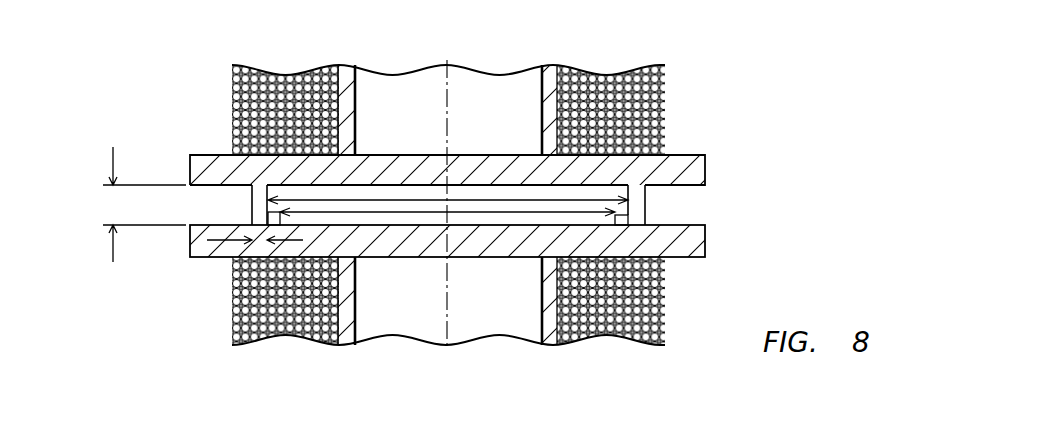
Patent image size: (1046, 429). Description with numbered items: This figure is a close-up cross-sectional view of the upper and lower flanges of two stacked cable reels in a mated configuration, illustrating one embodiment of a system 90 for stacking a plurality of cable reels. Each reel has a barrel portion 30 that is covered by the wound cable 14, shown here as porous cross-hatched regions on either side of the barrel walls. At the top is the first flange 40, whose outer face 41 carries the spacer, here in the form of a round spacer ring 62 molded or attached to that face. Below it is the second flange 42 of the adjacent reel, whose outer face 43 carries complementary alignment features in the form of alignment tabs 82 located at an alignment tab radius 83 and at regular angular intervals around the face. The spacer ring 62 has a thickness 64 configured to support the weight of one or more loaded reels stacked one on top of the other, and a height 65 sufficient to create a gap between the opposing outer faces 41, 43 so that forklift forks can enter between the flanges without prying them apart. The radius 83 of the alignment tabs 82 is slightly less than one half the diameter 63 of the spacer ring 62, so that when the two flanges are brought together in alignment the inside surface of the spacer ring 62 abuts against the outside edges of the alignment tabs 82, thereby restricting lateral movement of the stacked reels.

The cable 14 is at (668, 95).
The barrel portion 30 is at (357, 112).
The first flange 40 is at (708, 172).
The outer face 41 is at (696, 200).
The second flange 42 is at (190, 238).
The outer face 43 is at (190, 212).
The spacer ring 62 is at (646, 208).
The diameter 63 is at (518, 200).
The thickness 64 is at (222, 240).
The height 65 is at (110, 201).
The alignment tabs 82 is at (257, 214).
The alignment tab radius 83 is at (365, 214).
The system 90 is at (757, 89).